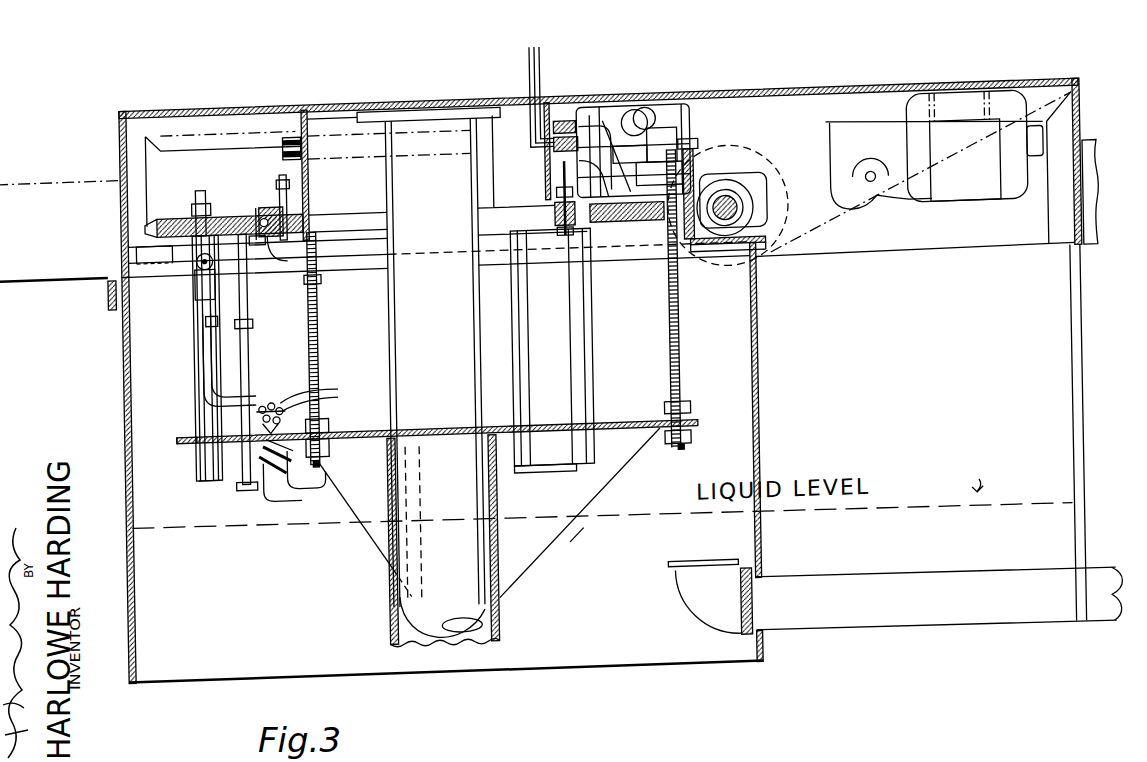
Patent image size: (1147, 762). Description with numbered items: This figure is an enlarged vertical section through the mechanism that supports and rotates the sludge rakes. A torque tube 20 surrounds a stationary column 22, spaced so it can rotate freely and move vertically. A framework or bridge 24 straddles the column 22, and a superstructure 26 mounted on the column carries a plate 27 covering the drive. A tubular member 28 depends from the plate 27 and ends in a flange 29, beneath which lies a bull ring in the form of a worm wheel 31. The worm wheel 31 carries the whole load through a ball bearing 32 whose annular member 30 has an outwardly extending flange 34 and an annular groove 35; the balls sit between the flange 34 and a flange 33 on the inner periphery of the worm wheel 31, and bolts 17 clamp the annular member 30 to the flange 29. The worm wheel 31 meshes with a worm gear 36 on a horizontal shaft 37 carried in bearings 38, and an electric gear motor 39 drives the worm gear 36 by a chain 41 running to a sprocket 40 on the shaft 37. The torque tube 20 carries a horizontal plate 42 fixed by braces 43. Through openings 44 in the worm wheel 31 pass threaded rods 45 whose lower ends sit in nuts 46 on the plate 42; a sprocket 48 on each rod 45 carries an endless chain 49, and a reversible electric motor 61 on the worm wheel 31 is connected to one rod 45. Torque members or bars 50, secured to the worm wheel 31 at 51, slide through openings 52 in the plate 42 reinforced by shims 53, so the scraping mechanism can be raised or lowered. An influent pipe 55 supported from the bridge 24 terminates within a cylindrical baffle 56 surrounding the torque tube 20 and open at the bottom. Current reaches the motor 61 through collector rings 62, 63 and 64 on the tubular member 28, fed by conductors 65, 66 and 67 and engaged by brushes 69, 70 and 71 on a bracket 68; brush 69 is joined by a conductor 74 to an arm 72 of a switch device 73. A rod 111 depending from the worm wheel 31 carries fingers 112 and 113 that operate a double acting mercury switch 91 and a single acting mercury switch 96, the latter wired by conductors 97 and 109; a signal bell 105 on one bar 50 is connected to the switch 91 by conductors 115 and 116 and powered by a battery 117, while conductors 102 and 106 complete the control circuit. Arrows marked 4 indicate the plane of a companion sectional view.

The section line 4- 4 is at (86, 132).
The bolts 17 is at (304, 168).
The torque tube 20 is at (386, 614).
The stationary column 22 is at (433, 373).
The framework or bridge 24 is at (58, 229).
The superstructure 26 is at (155, 95).
The plate 27 is at (331, 100).
The tubular member 28 is at (302, 146).
The flange 29 is at (271, 193).
The annular member 30 is at (312, 216).
The worm wheel 31 is at (153, 212).
The ball bearing 32 is at (273, 228).
The flange 33 is at (261, 200).
The outwardly extending flange 34 is at (252, 251).
The annular groove 35 is at (320, 270).
The worm gear 36 is at (745, 213).
The shaft 37 is at (745, 198).
The bearings 38 is at (746, 173).
The electric motor 39 is at (948, 210).
The sprocket 40 is at (720, 270).
The chain 41 is at (825, 236).
The plate 42 is at (631, 425).
The braces 43 is at (490, 516).
The openings 44 is at (627, 227).
The threaded rod 45 is at (319, 332).
The nuts 46 is at (689, 414).
The sprocket 48 is at (701, 166).
The endless chain 49 is at (551, 203).
The torque members 50 is at (200, 384).
The securing point 51 is at (209, 206).
The openings 52 is at (189, 426).
The shims or plates 53 is at (191, 448).
The influent pipe 55 is at (924, 589).
The cylindrical baffle 56 is at (759, 334).
The reversible electric motor 61 is at (625, 119).
The collector ring 62 is at (550, 123).
The collector ring 63 is at (552, 136).
The collector ring 64 is at (559, 158).
The conductor 65 is at (546, 56).
The conductor 66 is at (536, 70).
The conductor 67 is at (534, 49).
The bracket 68 is at (569, 174).
The brush 69 is at (575, 109).
The brush 70 is at (598, 110).
The brush 71 is at (591, 133).
The arm 72 is at (617, 143).
The switch device 73 is at (631, 141).
The conductor 74 is at (647, 135).
The double acting mercury switch device 91 is at (282, 404).
The single acting mercury switch device 96 is at (286, 461).
The conductor 97 is at (293, 485).
The conductor 102 is at (338, 387).
The signal device 105 is at (198, 266).
The conductor 106 is at (338, 381).
The conductor 109 is at (324, 467).
The rod 111 is at (248, 349).
The finger 112 is at (254, 312).
The finger 113 is at (245, 478).
The conductor 115 is at (208, 354).
The conductor 116 is at (206, 331).
The battery 117 is at (201, 308).